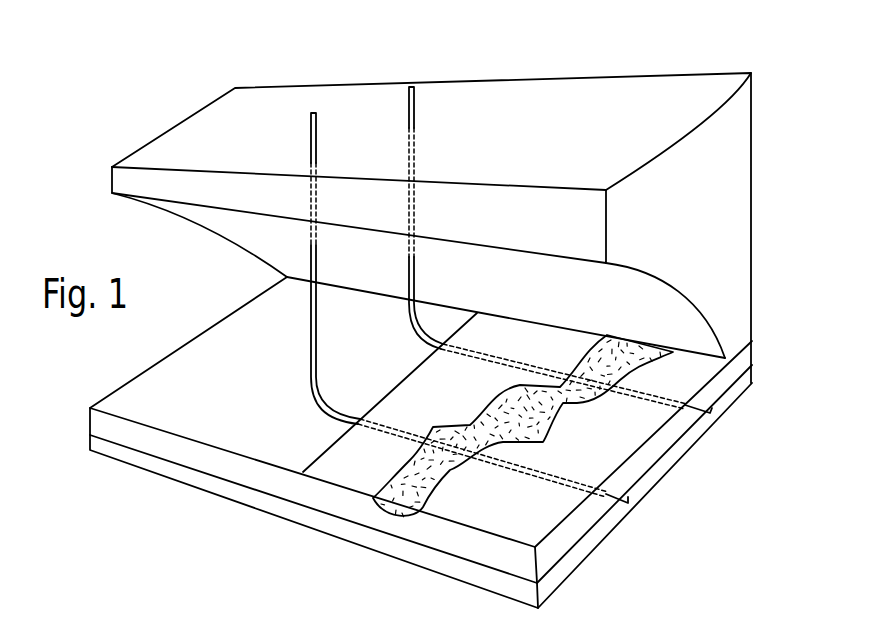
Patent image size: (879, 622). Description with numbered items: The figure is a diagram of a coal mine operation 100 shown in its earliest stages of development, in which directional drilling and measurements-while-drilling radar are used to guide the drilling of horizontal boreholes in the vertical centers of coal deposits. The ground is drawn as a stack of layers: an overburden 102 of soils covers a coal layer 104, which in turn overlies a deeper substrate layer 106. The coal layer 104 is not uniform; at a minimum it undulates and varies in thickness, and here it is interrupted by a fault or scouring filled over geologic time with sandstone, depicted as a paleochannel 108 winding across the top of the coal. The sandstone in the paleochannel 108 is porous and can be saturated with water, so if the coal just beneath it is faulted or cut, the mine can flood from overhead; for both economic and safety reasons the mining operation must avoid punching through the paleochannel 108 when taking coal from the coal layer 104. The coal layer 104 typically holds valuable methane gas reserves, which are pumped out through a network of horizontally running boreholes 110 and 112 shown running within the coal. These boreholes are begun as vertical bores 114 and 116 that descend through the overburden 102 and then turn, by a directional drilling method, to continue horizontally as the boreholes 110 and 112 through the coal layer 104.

The coal mine operation 100 is at (347, 53).
The overburden 102 is at (112, 184).
The coal layer 104 is at (90, 410).
The substrate layer 106 is at (90, 448).
The paleochannel 108 is at (390, 503).
The horizontally running borehole 110 is at (712, 412).
The horizontally running borehole 112 is at (628, 503).
The vertical bore 114 is at (409, 96).
The vertical bore 116 is at (311, 118).